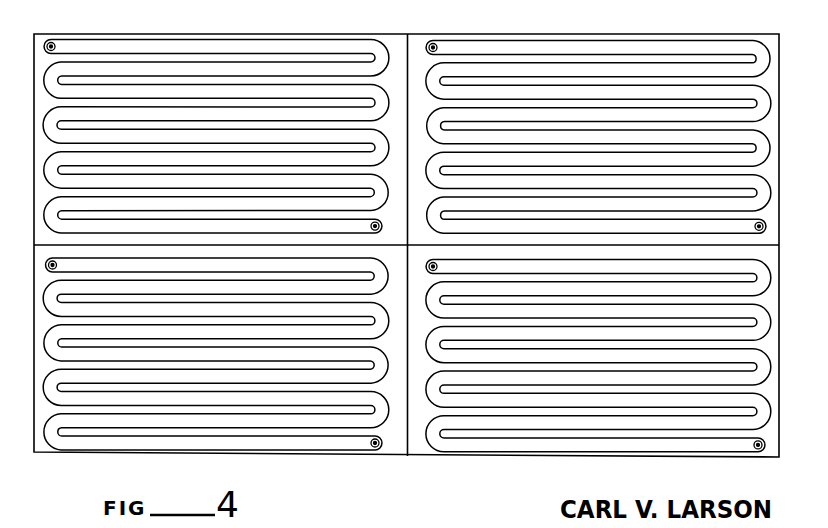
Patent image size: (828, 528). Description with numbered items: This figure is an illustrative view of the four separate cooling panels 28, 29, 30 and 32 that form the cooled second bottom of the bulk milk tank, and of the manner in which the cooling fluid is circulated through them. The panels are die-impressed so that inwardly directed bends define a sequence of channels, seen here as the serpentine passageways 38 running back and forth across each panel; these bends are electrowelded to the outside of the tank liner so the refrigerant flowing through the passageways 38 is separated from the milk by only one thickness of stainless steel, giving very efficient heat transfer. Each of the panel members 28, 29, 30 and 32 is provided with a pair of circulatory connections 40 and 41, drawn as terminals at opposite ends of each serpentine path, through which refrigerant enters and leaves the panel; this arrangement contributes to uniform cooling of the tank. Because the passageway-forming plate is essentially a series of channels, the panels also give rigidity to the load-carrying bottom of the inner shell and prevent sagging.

The cooling panel 28 is at (216, 115).
The cooling panel 29 is at (637, 78).
The cooling panel 30 is at (292, 418).
The cooling panel 32 is at (593, 443).
The passageways 38 is at (147, 50).
The circulatory connection 40 is at (49, 43).
The circulatory connection 41 is at (763, 224).